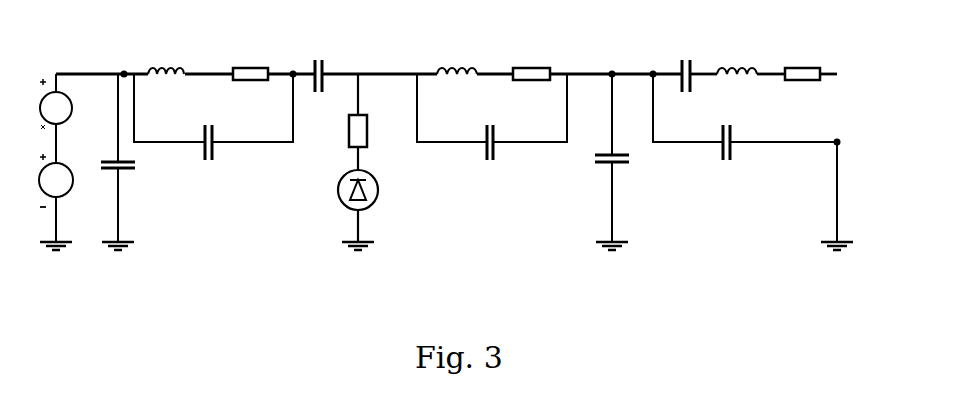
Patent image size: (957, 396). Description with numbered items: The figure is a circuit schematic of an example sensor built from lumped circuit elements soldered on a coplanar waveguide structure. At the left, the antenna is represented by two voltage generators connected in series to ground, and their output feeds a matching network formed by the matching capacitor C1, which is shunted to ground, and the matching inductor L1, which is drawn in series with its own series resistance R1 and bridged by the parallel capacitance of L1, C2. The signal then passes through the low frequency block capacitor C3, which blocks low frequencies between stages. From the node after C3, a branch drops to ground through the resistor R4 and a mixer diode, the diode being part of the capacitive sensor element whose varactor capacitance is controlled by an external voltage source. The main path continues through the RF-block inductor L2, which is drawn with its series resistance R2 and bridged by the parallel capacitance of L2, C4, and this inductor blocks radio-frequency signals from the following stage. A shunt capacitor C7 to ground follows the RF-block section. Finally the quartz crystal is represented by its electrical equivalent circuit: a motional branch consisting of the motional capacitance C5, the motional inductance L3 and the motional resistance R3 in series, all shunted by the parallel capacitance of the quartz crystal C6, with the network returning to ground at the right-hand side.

The matching inductor L1 is at (166, 59).
The series resistance of L1 R1 is at (250, 62).
The matching capacitor C1 is at (127, 162).
The parallel capacitance of L1 C2 is at (218, 159).
The low frequency block capacitor C3 is at (333, 69).
The resistor R4 is at (371, 122).
The RF-block inductor L2 is at (457, 59).
The series resistance of L2 R2 is at (531, 62).
The parallel capacitance of L2 C4 is at (502, 156).
The seventh capacitor C7 is at (622, 162).
The motional capacitance of quartz crystal C5 is at (671, 68).
The motional inductance of quartz crystal L3 is at (737, 59).
The motional resistance of quartz crystal R3 is at (802, 62).
The parallel capacitance of quartz crystal C6 is at (733, 158).